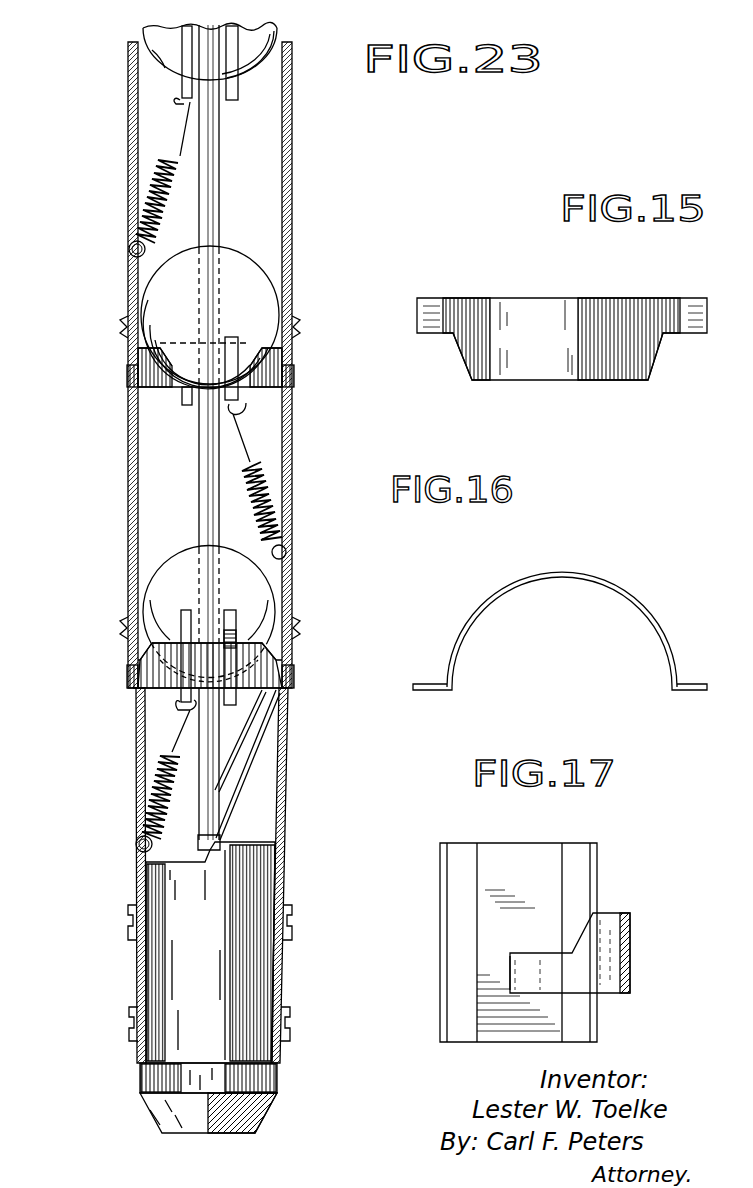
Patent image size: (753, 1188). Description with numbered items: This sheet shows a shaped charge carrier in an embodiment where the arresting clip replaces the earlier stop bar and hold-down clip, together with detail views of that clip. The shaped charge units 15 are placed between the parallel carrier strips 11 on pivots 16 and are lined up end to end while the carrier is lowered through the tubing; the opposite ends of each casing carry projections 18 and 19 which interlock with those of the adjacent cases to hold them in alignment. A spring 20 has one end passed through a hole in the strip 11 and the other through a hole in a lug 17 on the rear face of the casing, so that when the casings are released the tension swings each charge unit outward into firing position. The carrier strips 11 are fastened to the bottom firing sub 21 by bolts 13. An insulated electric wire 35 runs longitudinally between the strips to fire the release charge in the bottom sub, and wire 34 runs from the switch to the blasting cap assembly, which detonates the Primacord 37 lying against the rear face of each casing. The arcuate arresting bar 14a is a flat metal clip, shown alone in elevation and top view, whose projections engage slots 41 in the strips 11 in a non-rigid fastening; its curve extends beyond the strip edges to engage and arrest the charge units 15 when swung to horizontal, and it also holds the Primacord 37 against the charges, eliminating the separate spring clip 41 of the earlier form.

In FIG. 23, the carrier strips 11 is at (292, 157).
In FIG. 17, the carrier strips 11 is at (446, 873).
In FIG. 23, the bolts 13 is at (130, 922).
In FIG. 23, the arcuate arresting bar 14a is at (152, 389).
In FIG. 15, the arcuate arresting bar 14a is at (574, 374).
In FIG. 16, the arcuate arresting bar 14a is at (604, 580).
In FIG. 17, the arcuate arresting bar 14a is at (630, 950).
In FIG. 23, the shaped charge units 15 is at (248, 72).
In FIG. 23, the pivots 16 is at (123, 338).
In FIG. 23, the lug 17 is at (240, 96).
In FIG. 23, the projection 18 is at (232, 336).
In FIG. 23, the projection 19 is at (238, 618).
In FIG. 23, the spring 20 is at (166, 162).
In FIG. 23, the bottom firing sub 21 is at (160, 968).
In FIG. 23, the wire 34 is at (250, 782).
In FIG. 23, the insulated electric wire 35 is at (240, 746).
In FIG. 23, the Primacord 37 is at (204, 484).
In FIG. 17, the spring clips 41 is at (510, 968).